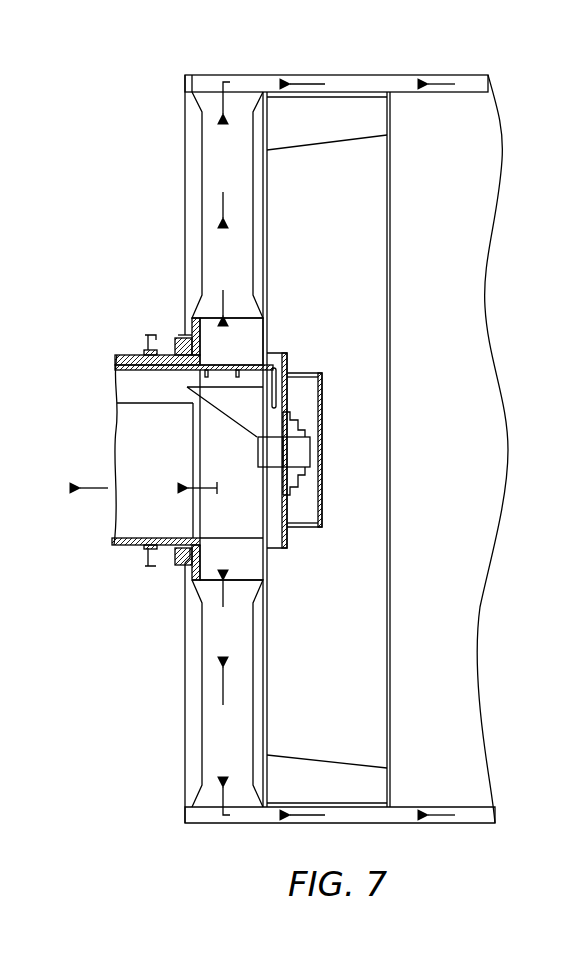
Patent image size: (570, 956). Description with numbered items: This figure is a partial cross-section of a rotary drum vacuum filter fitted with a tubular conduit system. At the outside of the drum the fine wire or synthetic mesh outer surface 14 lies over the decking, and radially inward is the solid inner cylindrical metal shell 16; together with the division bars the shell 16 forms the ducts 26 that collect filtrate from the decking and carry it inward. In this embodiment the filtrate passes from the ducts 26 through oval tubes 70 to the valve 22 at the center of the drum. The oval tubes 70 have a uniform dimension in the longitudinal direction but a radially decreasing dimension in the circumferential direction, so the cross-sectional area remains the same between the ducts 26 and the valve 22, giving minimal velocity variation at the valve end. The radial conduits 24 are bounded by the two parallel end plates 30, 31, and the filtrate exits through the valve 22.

The mesh outer surface 14 is at (355, 75).
The ducts 26 is at (465, 85).
The inner cylindrical metal shell 16 is at (470, 92).
The oval tubes 70 is at (200, 150).
The end plate 30 is at (193, 207).
The radial conduits 24 is at (213, 266).
The end plate 31 is at (268, 236).
The valve 22 is at (168, 427).